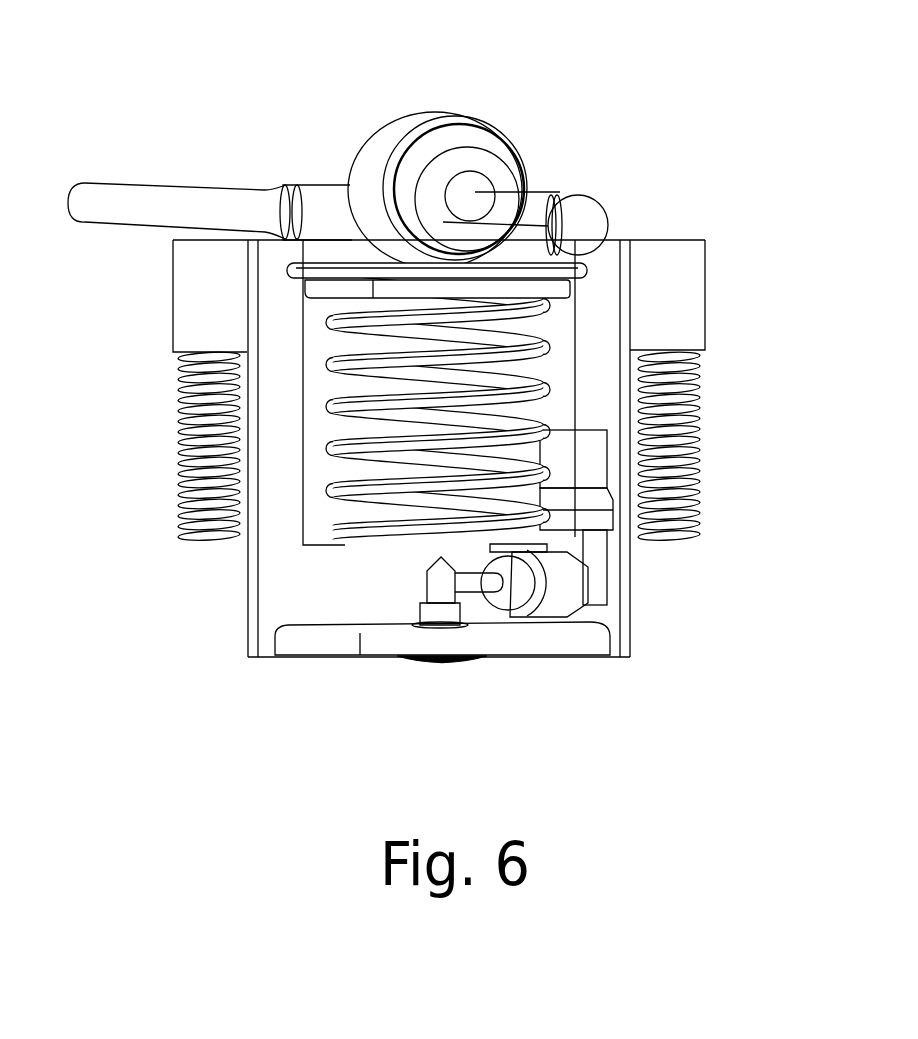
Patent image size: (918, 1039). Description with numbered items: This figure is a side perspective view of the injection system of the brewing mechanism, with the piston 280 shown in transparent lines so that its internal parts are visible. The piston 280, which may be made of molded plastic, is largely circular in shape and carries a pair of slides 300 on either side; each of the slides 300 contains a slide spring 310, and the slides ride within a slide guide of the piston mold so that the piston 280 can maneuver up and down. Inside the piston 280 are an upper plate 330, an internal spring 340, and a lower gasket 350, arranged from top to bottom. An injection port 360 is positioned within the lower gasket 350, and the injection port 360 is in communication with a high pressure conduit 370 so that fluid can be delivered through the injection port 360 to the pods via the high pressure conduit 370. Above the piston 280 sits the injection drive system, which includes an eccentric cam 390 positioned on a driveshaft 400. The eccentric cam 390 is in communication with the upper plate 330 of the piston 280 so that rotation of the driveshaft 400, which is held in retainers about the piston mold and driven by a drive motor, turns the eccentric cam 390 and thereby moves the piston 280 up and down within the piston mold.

The piston 280 is at (240, 636).
The slides 300 is at (705, 268).
The slide spring 310 is at (700, 448).
The upper plate 330 is at (585, 268).
The internal spring 340 is at (335, 533).
The lower gasket 350 is at (306, 648).
The injection port 360 is at (430, 662).
The high pressure conduit 370 is at (497, 604).
The eccentric cam 390 is at (470, 112).
The driveshaft 400 is at (210, 183).